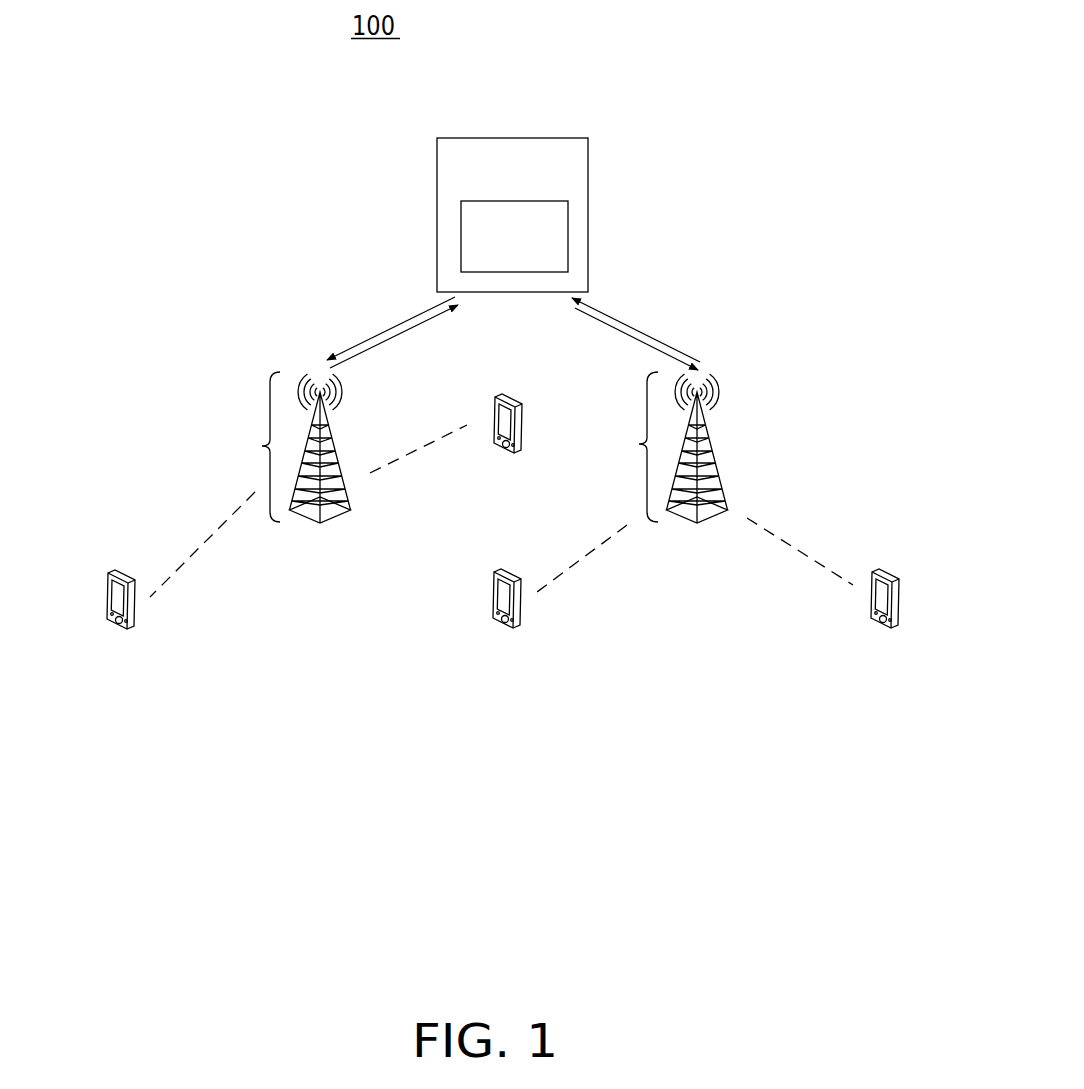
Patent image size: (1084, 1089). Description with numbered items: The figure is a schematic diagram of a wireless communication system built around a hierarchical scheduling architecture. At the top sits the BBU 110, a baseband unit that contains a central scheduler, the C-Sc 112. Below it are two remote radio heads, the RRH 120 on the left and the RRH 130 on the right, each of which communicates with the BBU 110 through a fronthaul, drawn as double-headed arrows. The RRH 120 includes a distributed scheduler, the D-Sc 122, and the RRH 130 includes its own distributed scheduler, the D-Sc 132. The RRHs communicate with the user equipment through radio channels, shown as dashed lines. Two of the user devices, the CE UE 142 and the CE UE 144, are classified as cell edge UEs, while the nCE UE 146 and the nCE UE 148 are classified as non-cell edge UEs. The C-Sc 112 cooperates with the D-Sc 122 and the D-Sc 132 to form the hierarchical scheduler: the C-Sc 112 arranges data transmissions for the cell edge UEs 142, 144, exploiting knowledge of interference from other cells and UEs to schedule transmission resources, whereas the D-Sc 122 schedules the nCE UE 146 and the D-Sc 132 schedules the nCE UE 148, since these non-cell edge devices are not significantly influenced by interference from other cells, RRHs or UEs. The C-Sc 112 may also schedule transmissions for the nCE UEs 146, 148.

The BBU 110 is at (553, 136).
The C-Sc 112 is at (568, 235).
The RRH 120 is at (321, 447).
The D-Sc 122 is at (332, 430).
The RRH 130 is at (702, 447).
The D-Sc 132 is at (722, 477).
The CE UE 142 is at (507, 572).
The CE UE 144 is at (510, 395).
The nCE UE 146 is at (118, 572).
The nCE UE 148 is at (883, 570).